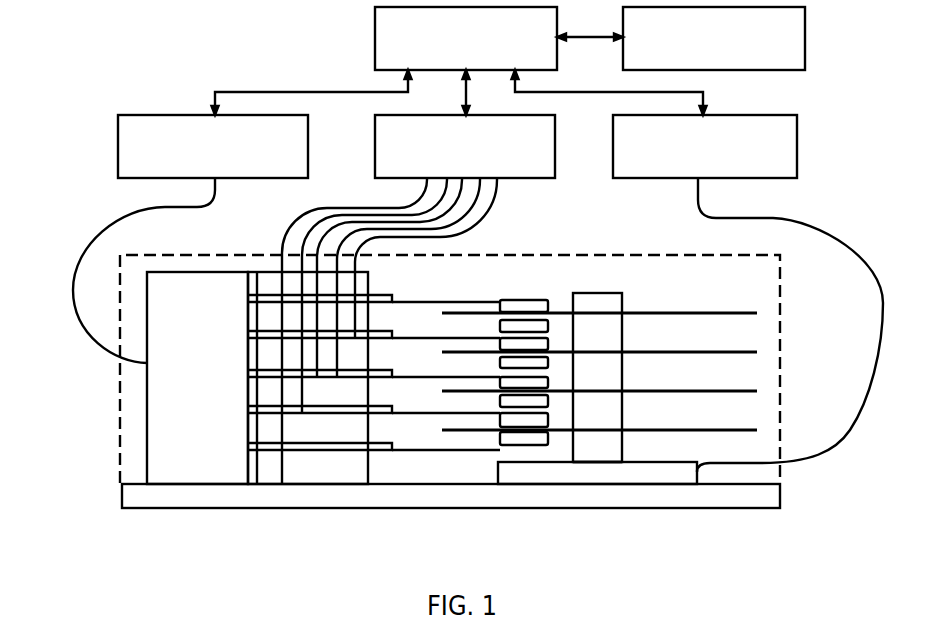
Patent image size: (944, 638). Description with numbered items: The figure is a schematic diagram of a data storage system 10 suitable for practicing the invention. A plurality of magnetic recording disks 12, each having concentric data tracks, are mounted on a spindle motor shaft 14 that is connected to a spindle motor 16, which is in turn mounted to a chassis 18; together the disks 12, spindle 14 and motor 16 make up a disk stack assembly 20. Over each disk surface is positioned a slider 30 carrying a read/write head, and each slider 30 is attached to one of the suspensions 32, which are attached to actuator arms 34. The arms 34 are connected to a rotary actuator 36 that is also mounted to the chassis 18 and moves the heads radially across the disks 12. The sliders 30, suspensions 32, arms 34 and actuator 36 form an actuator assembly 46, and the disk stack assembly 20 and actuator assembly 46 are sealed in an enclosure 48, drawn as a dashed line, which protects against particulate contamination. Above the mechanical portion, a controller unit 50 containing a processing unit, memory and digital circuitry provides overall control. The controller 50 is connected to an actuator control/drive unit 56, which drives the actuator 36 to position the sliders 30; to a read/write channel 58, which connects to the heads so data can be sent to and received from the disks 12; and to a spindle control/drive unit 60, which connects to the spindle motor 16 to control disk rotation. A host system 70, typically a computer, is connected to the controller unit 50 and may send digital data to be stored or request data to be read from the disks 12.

The data storage system 10 is at (160, 537).
The magnetic recording disks 12 is at (727, 430).
The spindle motor shaft 14 is at (625, 302).
The spindle motor 16 is at (624, 473).
The chassis 18 is at (780, 503).
The disk stack assembly 20 is at (563, 470).
The sliders 30 is at (522, 316).
The suspensions 32 is at (463, 370).
The actuator arms 34 is at (360, 453).
The rotary actuator 36 is at (184, 374).
The actuator assembly 46 is at (173, 453).
The enclosure 48 is at (120, 406).
The controller unit 50 is at (375, 40).
The actuator control/drive unit 56 is at (118, 148).
The read/write channel 58 is at (375, 148).
The spindle control/drive unit 60 is at (797, 146).
The host system 70 is at (805, 37).